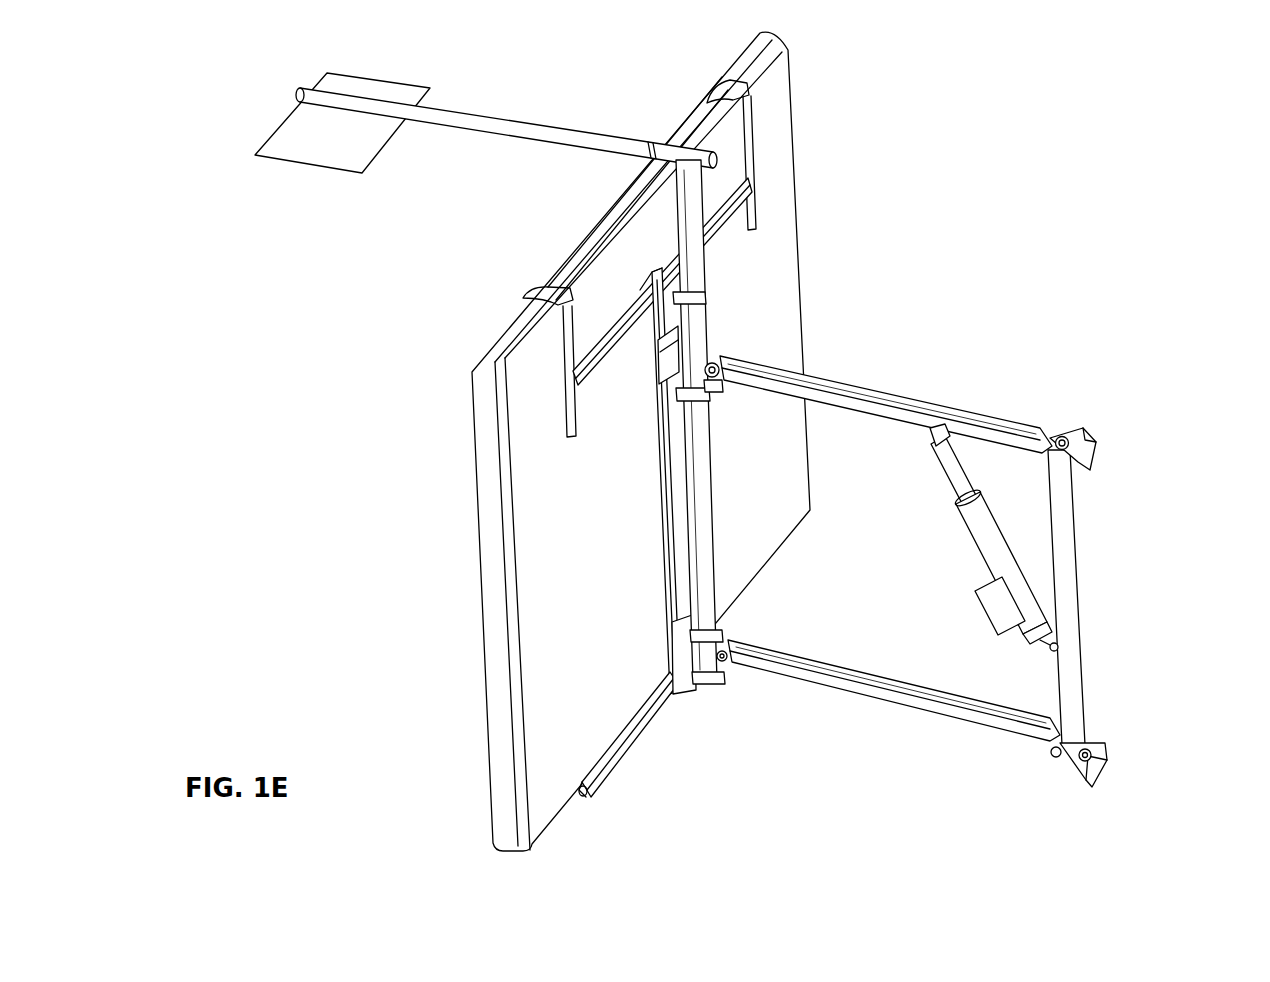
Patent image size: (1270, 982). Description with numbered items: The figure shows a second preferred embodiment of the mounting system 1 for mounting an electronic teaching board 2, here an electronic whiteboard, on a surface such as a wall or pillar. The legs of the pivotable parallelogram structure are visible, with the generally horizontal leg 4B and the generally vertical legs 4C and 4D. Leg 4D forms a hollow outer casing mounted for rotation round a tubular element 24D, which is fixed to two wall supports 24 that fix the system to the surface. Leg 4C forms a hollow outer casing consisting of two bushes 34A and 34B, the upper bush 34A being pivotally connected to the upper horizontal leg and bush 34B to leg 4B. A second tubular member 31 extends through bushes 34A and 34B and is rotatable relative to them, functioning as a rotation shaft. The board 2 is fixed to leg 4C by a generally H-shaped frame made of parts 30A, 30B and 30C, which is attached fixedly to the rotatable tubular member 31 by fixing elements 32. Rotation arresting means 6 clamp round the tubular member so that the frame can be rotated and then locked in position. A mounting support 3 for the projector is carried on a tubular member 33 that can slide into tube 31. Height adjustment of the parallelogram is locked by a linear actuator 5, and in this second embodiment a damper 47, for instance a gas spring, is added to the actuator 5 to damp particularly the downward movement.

The mounting system 1 is at (1005, 116).
The electronic teaching board 2 is at (486, 706).
The mounting support 3 is at (277, 162).
The leg 4B is at (905, 703).
The leg 4C is at (715, 478).
The leg 4D is at (1080, 592).
The linear actuator 5 is at (980, 537).
The second rotation arresting means 6 is at (716, 356).
The wall support 24 is at (1098, 443).
The tubular element 24D is at (1062, 435).
The frame part 30A is at (600, 340).
The frame part 30B is at (658, 487).
The frame part 30C is at (640, 700).
The second tubular member 31 is at (706, 535).
The fixing element 32 is at (687, 325).
The tubular member 33 is at (545, 122).
The bush 34A is at (708, 390).
The bush 34B is at (716, 670).
The damper 47 is at (1001, 517).